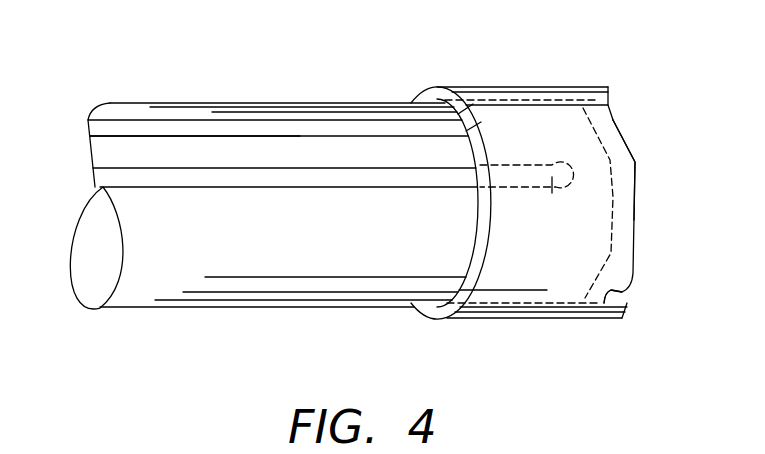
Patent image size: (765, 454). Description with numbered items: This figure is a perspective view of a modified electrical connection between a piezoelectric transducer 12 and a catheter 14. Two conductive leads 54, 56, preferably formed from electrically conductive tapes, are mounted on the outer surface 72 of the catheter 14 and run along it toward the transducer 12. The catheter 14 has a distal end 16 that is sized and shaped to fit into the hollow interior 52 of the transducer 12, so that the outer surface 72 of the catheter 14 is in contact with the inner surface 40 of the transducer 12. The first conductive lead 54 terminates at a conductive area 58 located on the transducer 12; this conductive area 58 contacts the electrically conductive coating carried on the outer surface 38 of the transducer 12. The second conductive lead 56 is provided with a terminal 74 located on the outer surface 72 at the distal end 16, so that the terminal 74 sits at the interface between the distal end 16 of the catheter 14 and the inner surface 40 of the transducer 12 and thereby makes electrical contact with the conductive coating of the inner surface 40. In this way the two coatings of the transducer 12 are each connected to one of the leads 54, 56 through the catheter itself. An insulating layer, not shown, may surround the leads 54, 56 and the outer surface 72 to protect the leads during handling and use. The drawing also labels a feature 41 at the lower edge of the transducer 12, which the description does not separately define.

The transducer 12 is at (548, 60).
The catheter 14 is at (255, 87).
The distal end 16 is at (557, 304).
The outer surface 38 is at (598, 85).
The inner surface 40 is at (597, 105).
The lip 41 is at (609, 288).
The hollow interior 52 is at (635, 162).
The conductive lead 54 is at (358, 128).
The conductive lead 56 is at (275, 173).
The conductive area 58 is at (467, 128).
The outer surface 72 is at (205, 250).
The terminal 74 is at (552, 193).